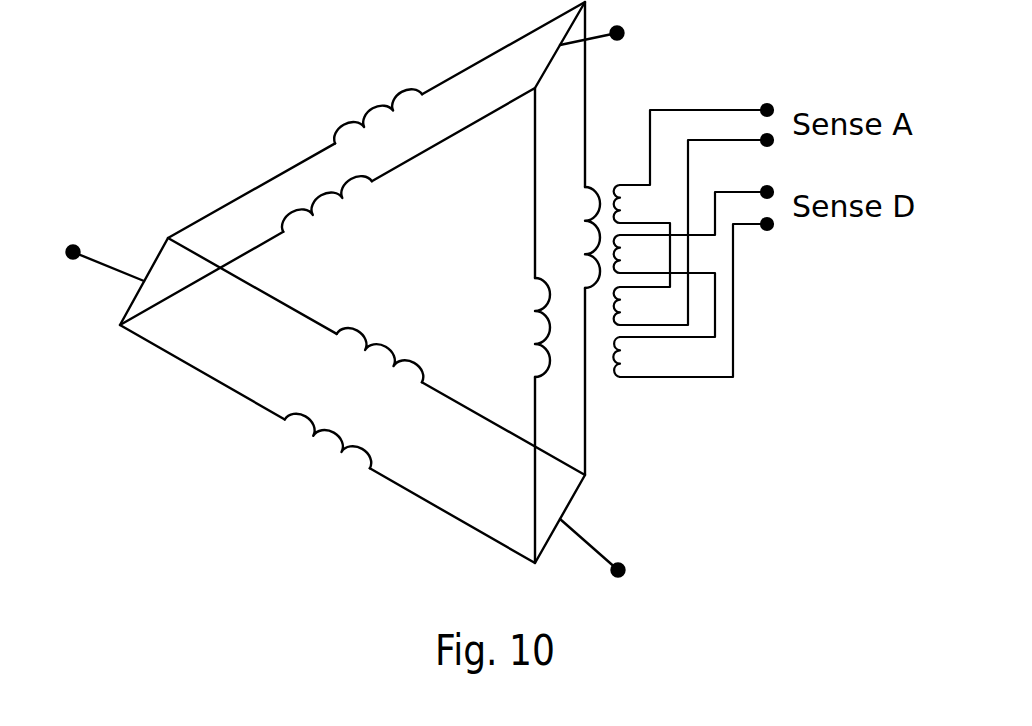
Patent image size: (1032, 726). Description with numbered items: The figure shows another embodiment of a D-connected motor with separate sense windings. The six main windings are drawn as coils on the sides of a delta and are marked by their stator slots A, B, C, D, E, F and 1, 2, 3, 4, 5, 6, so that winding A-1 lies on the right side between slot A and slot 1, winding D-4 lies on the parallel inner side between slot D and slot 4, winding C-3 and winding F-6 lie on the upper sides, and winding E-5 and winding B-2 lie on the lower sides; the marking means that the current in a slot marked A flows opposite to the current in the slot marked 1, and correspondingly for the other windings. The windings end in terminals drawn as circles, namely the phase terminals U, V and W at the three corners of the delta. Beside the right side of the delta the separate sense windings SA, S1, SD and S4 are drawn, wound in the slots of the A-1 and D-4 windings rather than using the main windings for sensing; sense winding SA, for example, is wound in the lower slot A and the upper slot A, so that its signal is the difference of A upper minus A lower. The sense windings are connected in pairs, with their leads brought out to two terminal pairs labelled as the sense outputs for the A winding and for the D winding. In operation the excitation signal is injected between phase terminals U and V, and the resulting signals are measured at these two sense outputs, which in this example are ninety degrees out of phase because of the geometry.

The stator slot 1 is at (576, 235).
The stator slot 2 is at (339, 426).
The stator slot 3 is at (367, 97).
The stator slot 4 is at (525, 330).
The stator slot 5 is at (388, 337).
The stator slot 6 is at (317, 190).
The stator slot A is at (576, 215).
The stator slot B is at (345, 446).
The stator slot C is at (360, 118).
The stator slot D is at (525, 308).
The stator slot E is at (395, 358).
The stator slot F is at (312, 208).
The phase terminal U is at (610, 34).
The phase terminal V is at (611, 563).
The phase terminal W is at (86, 258).
The sense winding SA is at (693, 195).
The sense winding S1 is at (693, 261).
The sense winding SD is at (693, 229).
The sense winding S4 is at (693, 297).